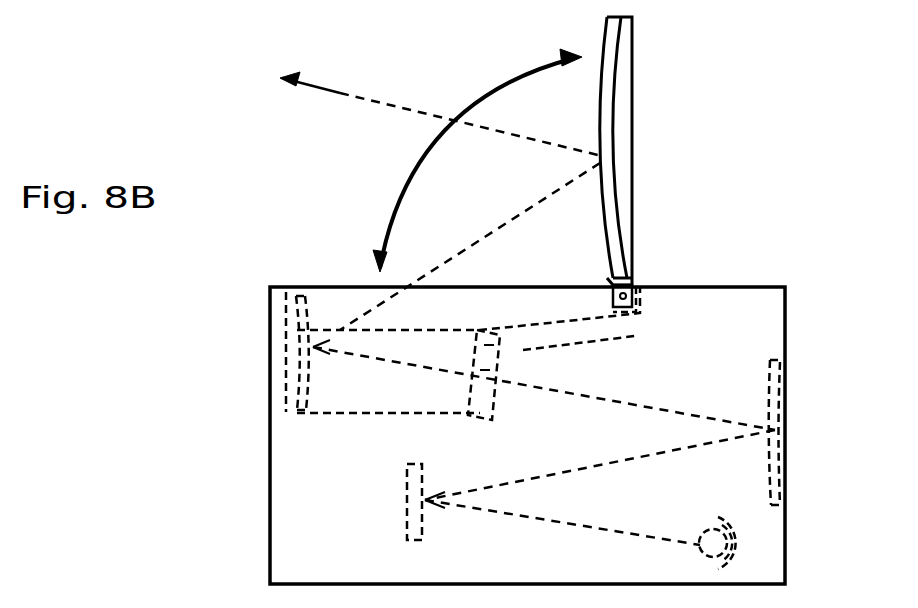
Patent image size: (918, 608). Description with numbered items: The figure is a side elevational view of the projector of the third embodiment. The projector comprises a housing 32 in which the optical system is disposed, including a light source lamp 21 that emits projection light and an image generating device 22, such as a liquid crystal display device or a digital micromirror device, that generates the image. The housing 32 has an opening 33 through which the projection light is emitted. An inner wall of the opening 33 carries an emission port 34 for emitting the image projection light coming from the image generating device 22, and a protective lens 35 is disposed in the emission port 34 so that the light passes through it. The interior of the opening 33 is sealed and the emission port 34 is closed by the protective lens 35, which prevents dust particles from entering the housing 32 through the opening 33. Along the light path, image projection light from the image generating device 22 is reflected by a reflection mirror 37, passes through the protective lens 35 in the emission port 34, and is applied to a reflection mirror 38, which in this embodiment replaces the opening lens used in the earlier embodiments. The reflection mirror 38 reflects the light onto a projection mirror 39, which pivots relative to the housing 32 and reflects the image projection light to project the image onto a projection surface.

The light source lamp 21 is at (745, 538).
The image generating device 22 is at (407, 500).
The housing 32 is at (787, 290).
The opening 33 is at (343, 306).
The emission port 34 is at (462, 423).
The protective lens 35 is at (640, 333).
The reflection mirror 37 is at (790, 370).
The reflection mirror 38 is at (292, 352).
The projection mirror 39 is at (607, 78).